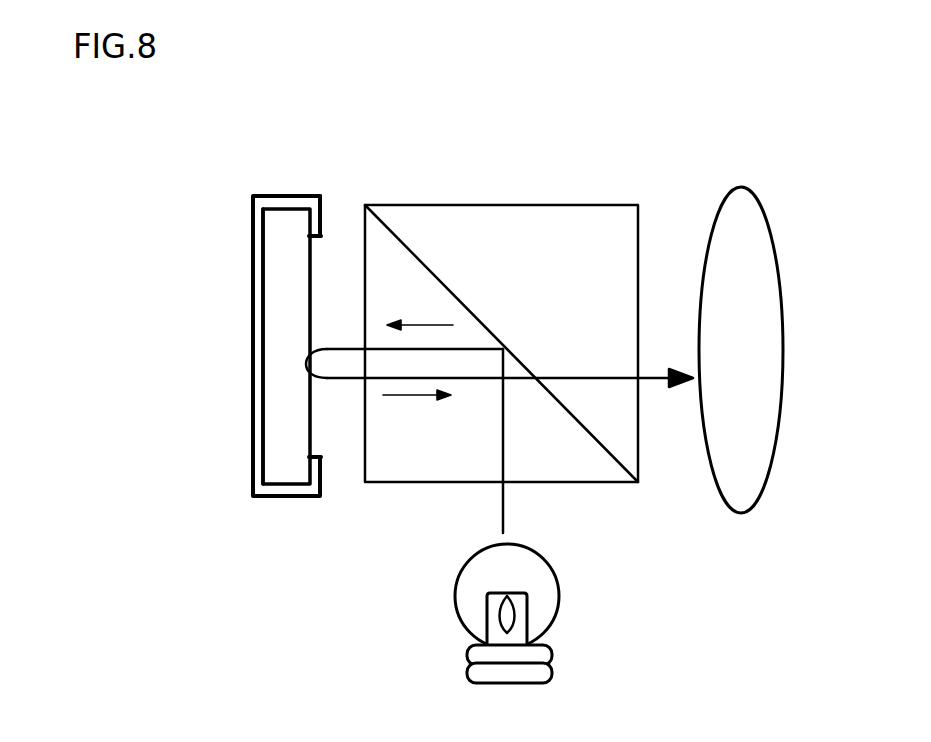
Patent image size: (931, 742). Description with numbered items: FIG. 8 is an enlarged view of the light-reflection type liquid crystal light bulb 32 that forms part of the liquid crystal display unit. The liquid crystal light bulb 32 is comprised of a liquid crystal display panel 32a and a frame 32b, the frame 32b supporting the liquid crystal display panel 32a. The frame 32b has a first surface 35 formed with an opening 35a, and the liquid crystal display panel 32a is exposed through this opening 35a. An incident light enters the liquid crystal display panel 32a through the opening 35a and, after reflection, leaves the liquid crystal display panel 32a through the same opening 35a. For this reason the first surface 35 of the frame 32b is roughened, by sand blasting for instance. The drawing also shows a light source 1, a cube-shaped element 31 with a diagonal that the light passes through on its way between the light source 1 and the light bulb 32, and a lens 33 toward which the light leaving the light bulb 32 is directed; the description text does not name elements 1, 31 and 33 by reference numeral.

The light source lamp 1 is at (547, 628).
The beam splitter 31 is at (518, 207).
The liquid crystal light bulb 32 is at (158, 346).
The liquid crystal display panel 32a is at (276, 398).
The frame 32b is at (252, 294).
The lens 33 is at (770, 348).
The first surface 35 is at (322, 484).
The opening 35a is at (324, 249).